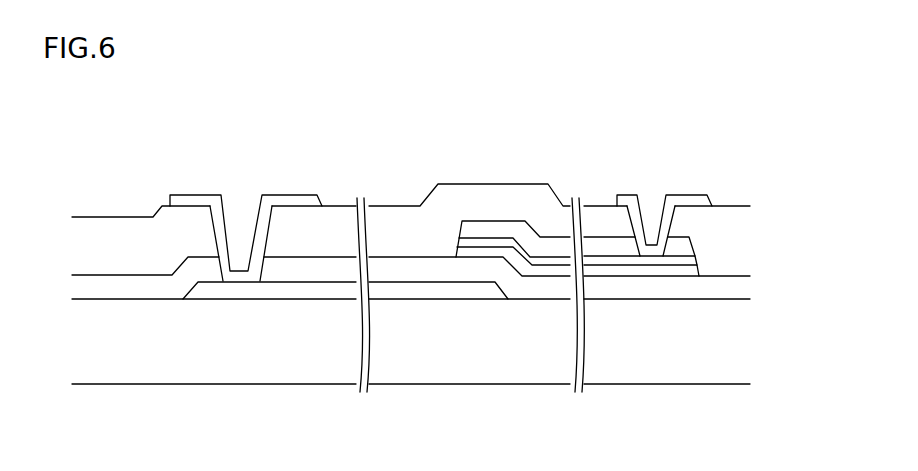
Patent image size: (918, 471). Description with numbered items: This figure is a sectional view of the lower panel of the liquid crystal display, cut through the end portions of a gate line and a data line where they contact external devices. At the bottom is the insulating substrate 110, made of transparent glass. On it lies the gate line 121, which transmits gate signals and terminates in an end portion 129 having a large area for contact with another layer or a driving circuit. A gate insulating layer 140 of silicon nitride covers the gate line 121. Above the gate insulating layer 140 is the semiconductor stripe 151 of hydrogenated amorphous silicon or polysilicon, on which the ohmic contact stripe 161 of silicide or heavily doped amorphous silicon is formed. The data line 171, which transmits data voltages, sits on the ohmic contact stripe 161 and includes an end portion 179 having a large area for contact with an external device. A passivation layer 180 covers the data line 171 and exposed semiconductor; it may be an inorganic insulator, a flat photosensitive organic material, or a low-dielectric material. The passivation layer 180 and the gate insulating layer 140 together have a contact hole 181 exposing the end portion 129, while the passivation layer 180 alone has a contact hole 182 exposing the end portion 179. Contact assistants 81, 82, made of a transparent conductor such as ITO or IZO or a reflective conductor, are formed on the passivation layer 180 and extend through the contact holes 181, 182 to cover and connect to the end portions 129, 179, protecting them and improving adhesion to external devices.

The insulating substrate 110 is at (303, 362).
The gate line 121 is at (388, 292).
The end portion of gate line 129 is at (250, 290).
The gate insulating layer 140 is at (128, 292).
The semiconductor stripe 151 is at (540, 268).
The ohmic contact stripe 161 is at (497, 241).
The data line 171 is at (477, 223).
The end portion of data line 179 is at (587, 250).
The passivation layer 180 is at (335, 213).
The contact hole 181 is at (236, 207).
The contact hole 182 is at (654, 200).
The contact assistant 81 is at (202, 196).
The contact assistant 82 is at (622, 200).